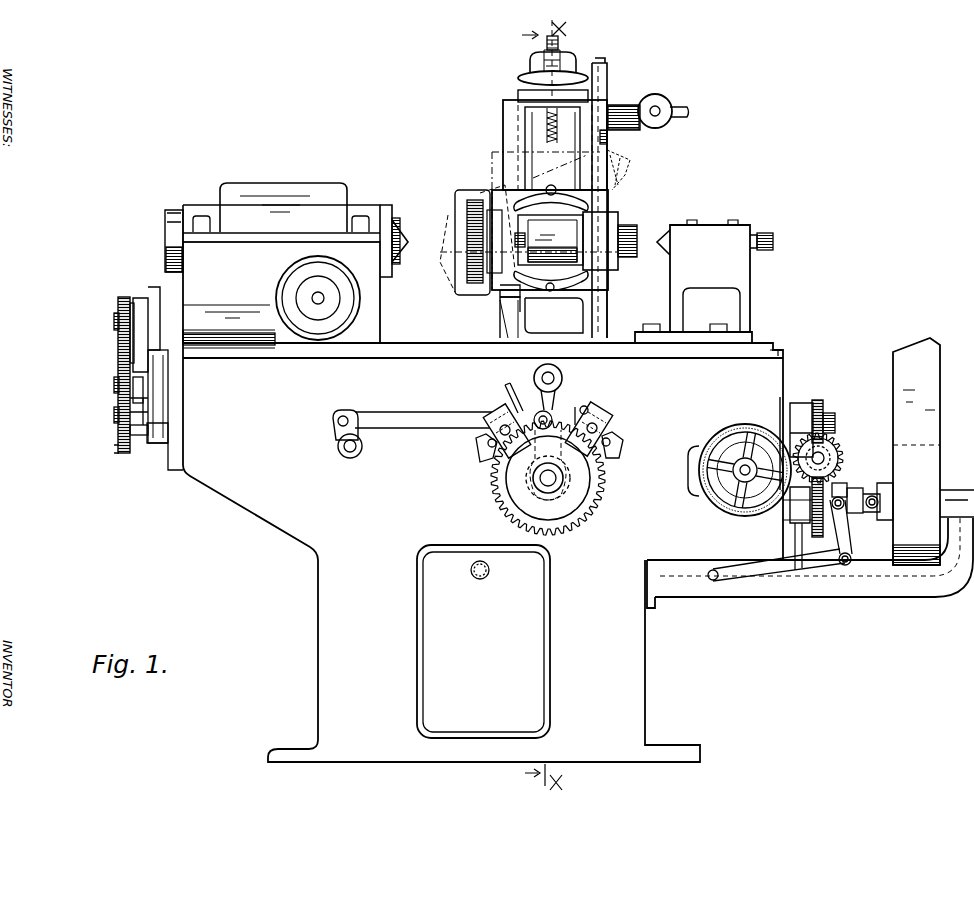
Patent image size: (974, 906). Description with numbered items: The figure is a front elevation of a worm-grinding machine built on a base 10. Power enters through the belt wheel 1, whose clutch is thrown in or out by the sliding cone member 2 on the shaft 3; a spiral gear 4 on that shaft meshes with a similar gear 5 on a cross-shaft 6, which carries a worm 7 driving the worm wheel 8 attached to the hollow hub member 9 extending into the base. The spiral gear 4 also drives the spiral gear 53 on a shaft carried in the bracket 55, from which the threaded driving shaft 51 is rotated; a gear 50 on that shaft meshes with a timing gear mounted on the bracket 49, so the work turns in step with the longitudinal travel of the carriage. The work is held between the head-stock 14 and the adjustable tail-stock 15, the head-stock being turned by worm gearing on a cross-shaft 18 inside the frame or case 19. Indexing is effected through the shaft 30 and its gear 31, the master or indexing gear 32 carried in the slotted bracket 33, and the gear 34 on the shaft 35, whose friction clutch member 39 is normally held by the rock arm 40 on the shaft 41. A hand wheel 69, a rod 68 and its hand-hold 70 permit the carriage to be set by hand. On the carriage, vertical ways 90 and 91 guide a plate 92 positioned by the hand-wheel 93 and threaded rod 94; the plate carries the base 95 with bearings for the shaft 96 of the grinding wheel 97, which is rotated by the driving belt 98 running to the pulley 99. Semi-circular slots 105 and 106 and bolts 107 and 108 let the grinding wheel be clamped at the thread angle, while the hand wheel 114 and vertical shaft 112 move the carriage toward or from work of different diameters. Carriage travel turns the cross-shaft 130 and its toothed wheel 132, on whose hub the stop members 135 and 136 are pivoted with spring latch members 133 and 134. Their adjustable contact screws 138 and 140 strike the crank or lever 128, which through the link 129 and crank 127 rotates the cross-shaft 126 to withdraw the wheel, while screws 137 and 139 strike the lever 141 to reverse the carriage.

The belt wheel 1 is at (930, 380).
The sliding cone member 2 is at (858, 488).
The shaft 3 is at (842, 484).
The spiral gear 4 is at (826, 512).
The spiral gear 5 is at (842, 460).
The cross-shaft 6 is at (838, 452).
The worm 7 is at (826, 447).
The worm wheel 8 is at (822, 400).
The hollow hub member 9 is at (800, 407).
The base 10 is at (578, 546).
The head-stock 14 is at (390, 212).
The tail-stock 15 is at (672, 240).
The cross-shaft 18 is at (324, 298).
The frame or case 19 is at (281, 265).
The shaft 30 is at (114, 320).
The gear 31 is at (121, 300).
The master or indexing gear 32 is at (118, 352).
The bracket 33 is at (140, 300).
The gear 34 is at (118, 373).
The shaft 35 is at (114, 388).
The friction clutch member 39 is at (130, 405).
The rock arm 40 is at (165, 430).
The shaft 41 is at (152, 430).
The bracket 49 is at (130, 430).
The gear 50 is at (118, 452).
The driving shaft 51 is at (114, 418).
The spiral gear 53 is at (825, 517).
The bracket 55 is at (800, 517).
The rod 68 is at (746, 514).
The hand wheel 69 is at (703, 484).
The hand-hold 70 is at (728, 494).
The vertical way 90 is at (504, 116).
The vertical way 91 is at (608, 145).
The plate 92 is at (565, 228).
The hand-wheel 93 is at (518, 79).
The threaded rod 94 is at (546, 42).
The base 95 is at (595, 222).
The shaft 96 is at (638, 240).
The grinding wheel 97 is at (460, 272).
The driving belt 98 is at (608, 197).
The pulley 99 is at (600, 210).
The semi-circular slot 105 is at (540, 200).
The semi-circular slot 106 is at (522, 290).
The bolt 107 is at (548, 188).
The bolt 108 is at (525, 303).
The vertical shaft 112 is at (610, 134).
The hand wheel 114 is at (660, 97).
The cross-shaft 126 is at (344, 446).
The crank 127 is at (335, 432).
The crank or lever 128 is at (552, 412).
The link 129 is at (362, 410).
The cross-shaft 130 is at (540, 478).
The toothed wheel 132 is at (500, 494).
The latch member 133 is at (608, 455).
The latch member 134 is at (492, 455).
The stop member 135 is at (600, 418).
The stop member 136 is at (490, 418).
The adjustable contact screw 137 is at (594, 408).
The adjustable contact screw 138 is at (581, 405).
The adjustable contact screw 139 is at (515, 410).
The adjustable contact screw 140 is at (512, 390).
The lever 141 is at (554, 397).